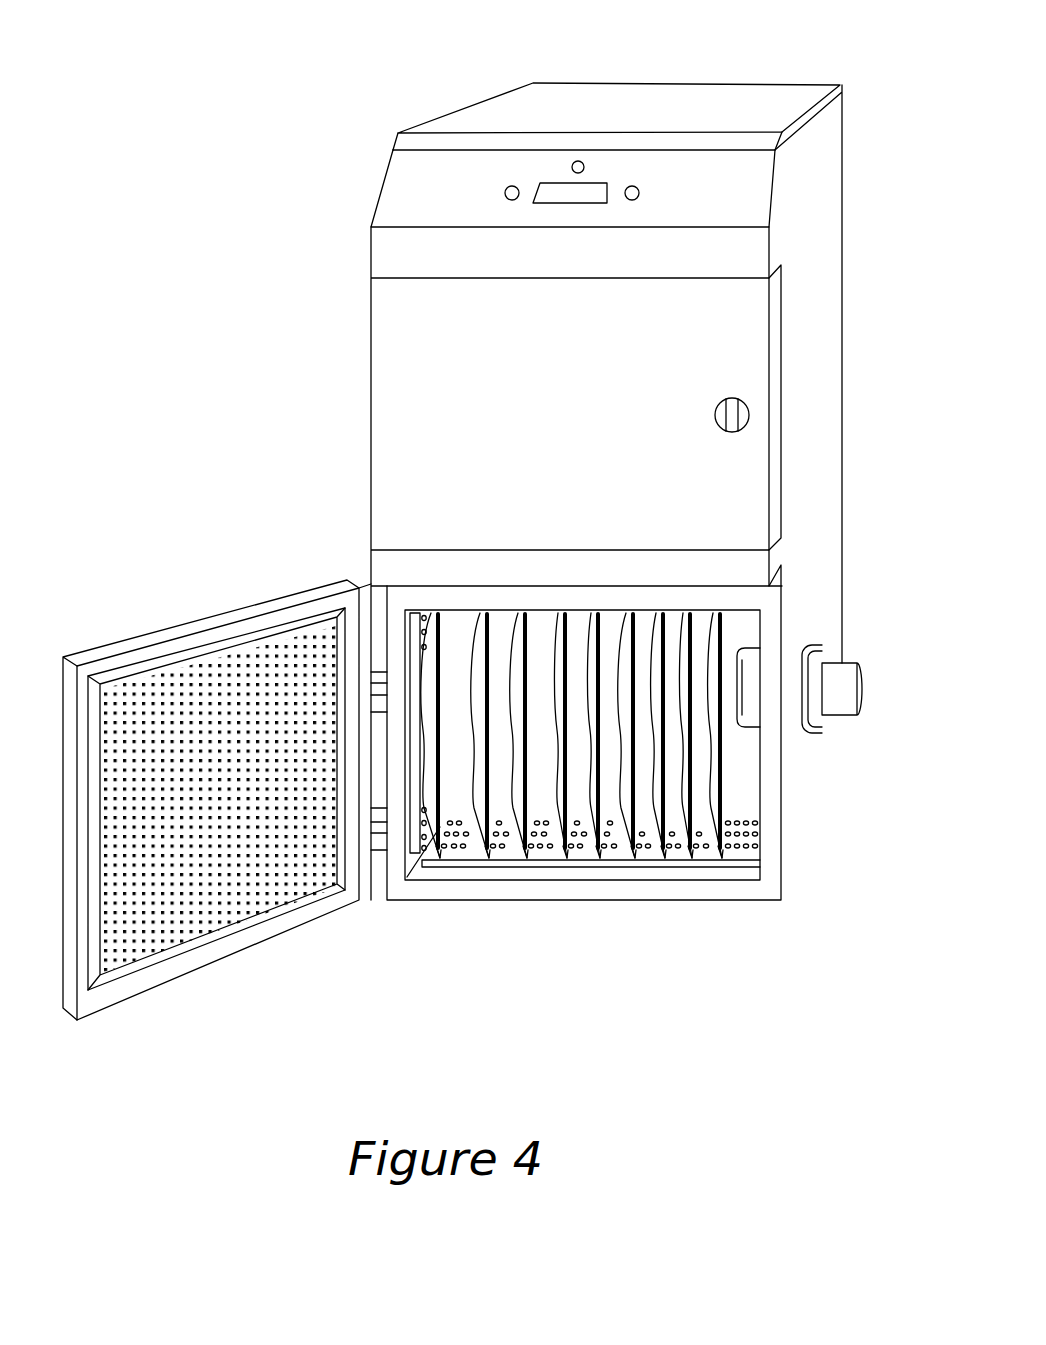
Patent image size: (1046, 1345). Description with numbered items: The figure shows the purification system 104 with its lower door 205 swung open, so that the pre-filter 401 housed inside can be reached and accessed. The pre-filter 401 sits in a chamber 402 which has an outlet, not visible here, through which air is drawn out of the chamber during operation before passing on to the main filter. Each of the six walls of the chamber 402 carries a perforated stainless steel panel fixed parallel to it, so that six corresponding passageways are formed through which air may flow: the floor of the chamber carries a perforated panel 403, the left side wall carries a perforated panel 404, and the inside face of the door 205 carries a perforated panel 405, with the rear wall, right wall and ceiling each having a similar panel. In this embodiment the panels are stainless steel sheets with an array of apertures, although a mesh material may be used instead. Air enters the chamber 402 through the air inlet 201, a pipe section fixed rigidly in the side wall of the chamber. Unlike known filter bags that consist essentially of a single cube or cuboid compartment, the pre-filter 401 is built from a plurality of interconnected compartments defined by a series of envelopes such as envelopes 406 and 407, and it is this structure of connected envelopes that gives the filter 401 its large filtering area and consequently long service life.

The purification system 104 is at (642, 97).
The air inlet 201 is at (782, 898).
The lower door 205 is at (217, 778).
The pre-filter 401 is at (553, 810).
The chamber 402 is at (740, 762).
The perforated panel 403 is at (628, 832).
The perforated panel 404 is at (428, 843).
The perforated panel 405 is at (249, 898).
The envelope 406 is at (752, 826).
The envelope 407 is at (700, 838).